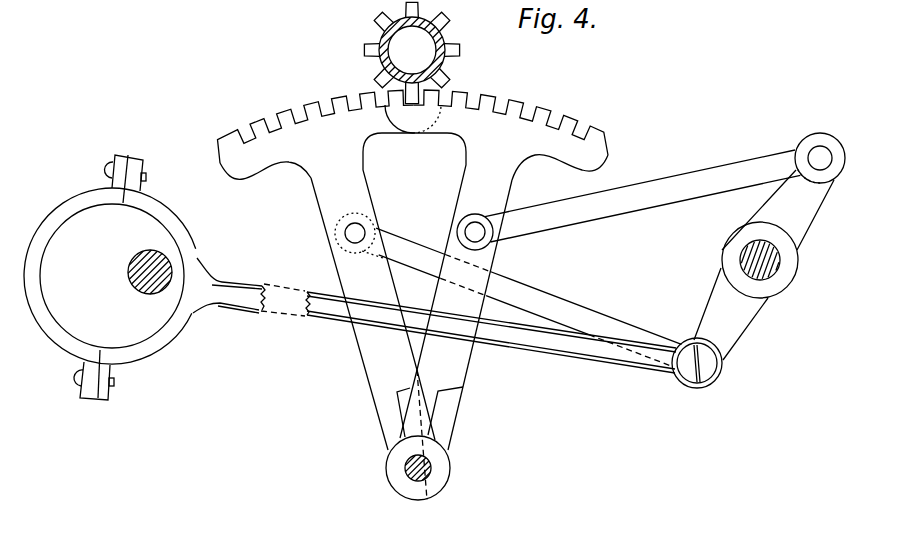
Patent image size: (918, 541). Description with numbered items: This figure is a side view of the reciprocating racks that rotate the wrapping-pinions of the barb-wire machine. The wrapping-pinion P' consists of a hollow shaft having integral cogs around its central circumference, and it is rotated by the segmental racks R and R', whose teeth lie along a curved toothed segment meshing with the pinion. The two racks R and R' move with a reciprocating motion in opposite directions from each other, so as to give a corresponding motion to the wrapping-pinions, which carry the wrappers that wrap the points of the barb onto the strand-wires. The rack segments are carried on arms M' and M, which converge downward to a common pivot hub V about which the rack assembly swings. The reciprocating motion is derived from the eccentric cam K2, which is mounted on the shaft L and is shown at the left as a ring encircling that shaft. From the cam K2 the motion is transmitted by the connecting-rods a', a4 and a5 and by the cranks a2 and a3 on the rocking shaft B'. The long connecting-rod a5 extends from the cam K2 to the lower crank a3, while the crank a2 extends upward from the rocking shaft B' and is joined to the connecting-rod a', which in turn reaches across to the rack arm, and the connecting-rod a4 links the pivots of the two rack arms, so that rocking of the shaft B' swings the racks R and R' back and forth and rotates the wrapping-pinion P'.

The eccentric cam K2 is at (143, 277).
The shaft L is at (162, 266).
The connecting-rod a5 is at (468, 328).
The segmental rack R' is at (316, 134).
The segmental rack R is at (496, 135).
The left arm of rack M' is at (373, 291).
The right arm of rack M is at (456, 316).
The pivot hub of rack arms V is at (450, 468).
The wrapping-pinion P' is at (411, 52).
The connecting-rod a' is at (628, 200).
The connecting-rod a4 is at (508, 290).
The crank a2 is at (783, 191).
The rocking shaft B' is at (733, 260).
The crank a3 is at (720, 328).